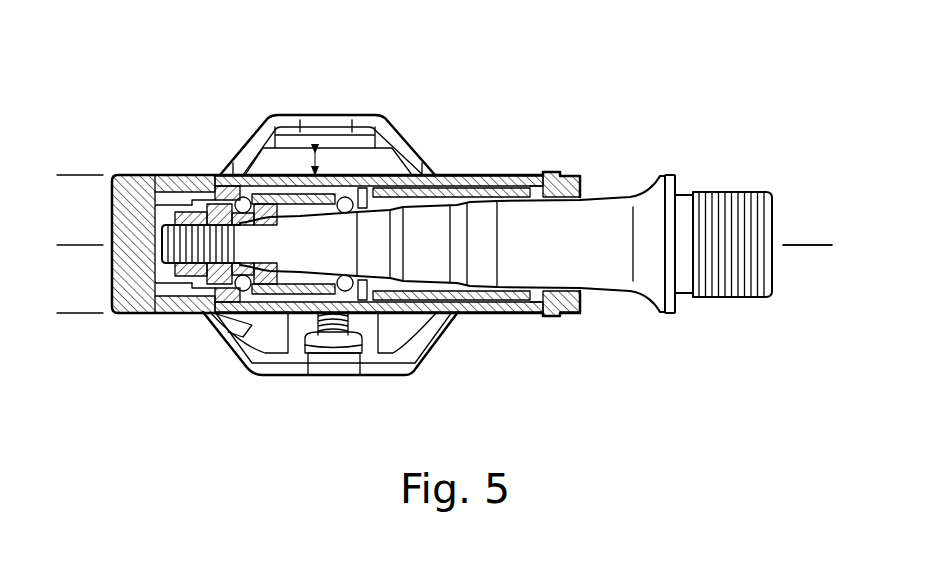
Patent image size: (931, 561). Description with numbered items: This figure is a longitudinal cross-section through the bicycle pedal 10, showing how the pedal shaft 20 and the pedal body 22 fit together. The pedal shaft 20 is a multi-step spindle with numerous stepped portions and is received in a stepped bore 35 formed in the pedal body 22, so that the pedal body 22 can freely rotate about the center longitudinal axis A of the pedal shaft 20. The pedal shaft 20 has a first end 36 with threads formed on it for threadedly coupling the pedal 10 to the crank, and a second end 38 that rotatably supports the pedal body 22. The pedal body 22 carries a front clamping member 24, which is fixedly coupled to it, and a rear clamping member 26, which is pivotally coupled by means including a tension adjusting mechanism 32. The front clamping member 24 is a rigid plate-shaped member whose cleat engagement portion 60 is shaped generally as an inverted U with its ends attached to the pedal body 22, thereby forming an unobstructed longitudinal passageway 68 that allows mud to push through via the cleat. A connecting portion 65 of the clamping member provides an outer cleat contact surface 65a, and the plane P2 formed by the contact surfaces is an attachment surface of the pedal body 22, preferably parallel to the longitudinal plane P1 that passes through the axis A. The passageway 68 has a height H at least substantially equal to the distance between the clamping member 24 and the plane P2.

The bicycle pedal 10 is at (618, 97).
The pedal shaft 20 is at (670, 172).
The pedal body 22 is at (507, 172).
The front clamping member 24 is at (381, 112).
The rear clamping member 26 is at (434, 356).
The tension adjusting mechanism 32 is at (302, 343).
The stepped bore 35 is at (165, 285).
The first end 36 is at (737, 190).
The second end 38 is at (300, 220).
The cleat engagement portion 60 is at (335, 112).
The connecting portion 65 is at (168, 177).
The outer cleat contact surface 65a is at (196, 177).
The longitudinal passageway 68 is at (345, 162).
The height H is at (313, 162).
The plane P2 is at (68, 173).
The center longitudinal axis A is at (820, 244).
The longitudinal plane P1 is at (823, 212).